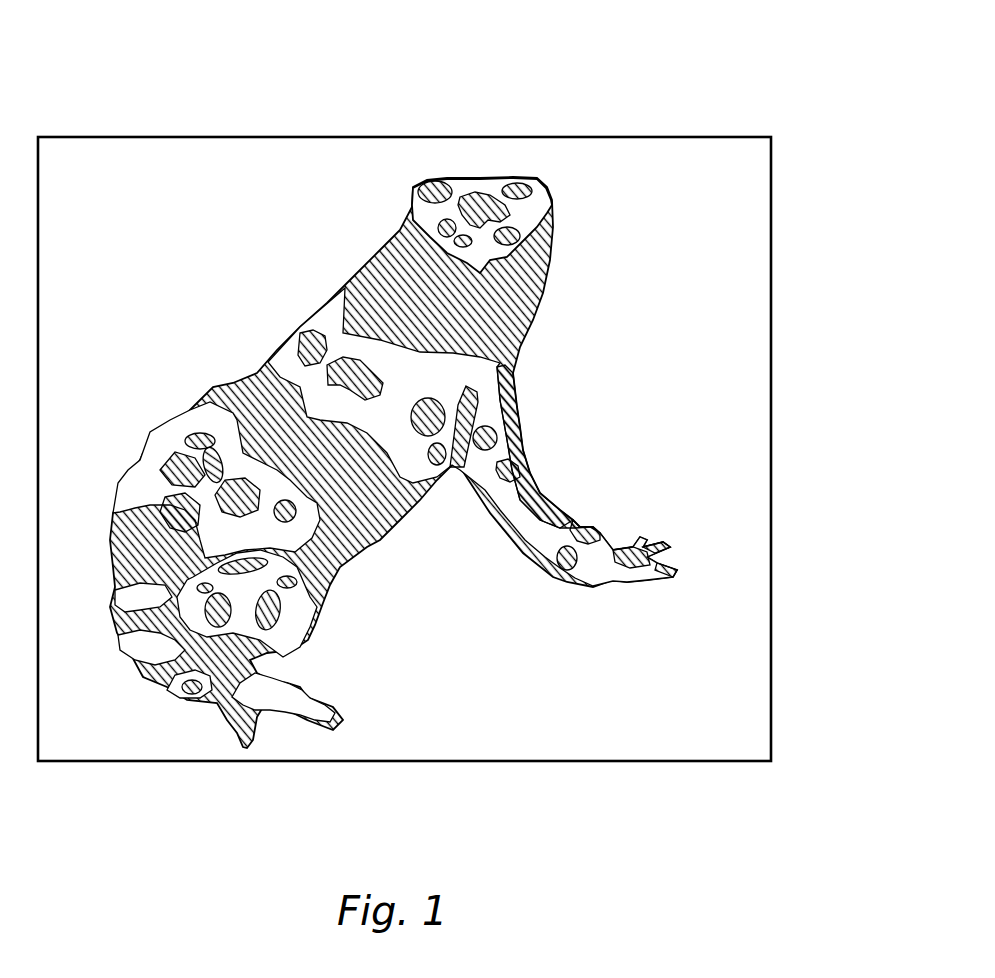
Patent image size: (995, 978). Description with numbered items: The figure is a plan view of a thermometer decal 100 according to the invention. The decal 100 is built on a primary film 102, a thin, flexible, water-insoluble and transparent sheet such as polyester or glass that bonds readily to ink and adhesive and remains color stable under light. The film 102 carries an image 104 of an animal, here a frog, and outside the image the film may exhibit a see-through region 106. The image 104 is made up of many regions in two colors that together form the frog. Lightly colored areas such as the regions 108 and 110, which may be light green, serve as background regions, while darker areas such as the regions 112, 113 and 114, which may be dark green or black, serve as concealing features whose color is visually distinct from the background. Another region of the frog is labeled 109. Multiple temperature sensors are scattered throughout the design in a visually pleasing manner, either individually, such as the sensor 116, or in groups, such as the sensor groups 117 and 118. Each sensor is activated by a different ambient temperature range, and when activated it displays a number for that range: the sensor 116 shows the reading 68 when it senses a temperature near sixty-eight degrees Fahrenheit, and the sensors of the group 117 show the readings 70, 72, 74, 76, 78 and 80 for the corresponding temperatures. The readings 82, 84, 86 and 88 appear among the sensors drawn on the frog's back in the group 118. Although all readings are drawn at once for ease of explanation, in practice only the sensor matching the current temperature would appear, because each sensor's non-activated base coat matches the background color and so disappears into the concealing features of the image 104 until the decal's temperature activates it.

The decal 100 is at (655, 40).
The primary film 102 is at (772, 291).
The image 104 is at (488, 170).
The see-through region 106 is at (186, 251).
The background region 108 is at (271, 349).
The foot portion 109 is at (603, 574).
The background region 110 is at (548, 190).
The concealing feature 112 is at (562, 578).
The concealing feature 113 is at (508, 470).
The concealing feature 114 is at (487, 434).
The sensor 116 is at (184, 482).
The sensor group 117 is at (367, 563).
The sensor group 118 is at (400, 247).
The colored region 68 is at (172, 524).
The colored region 70 is at (259, 398).
The colored region 72 is at (275, 428).
The colored region 74 is at (313, 458).
The colored region 76 is at (334, 488).
The colored region 78 is at (379, 491).
The colored region 80 is at (363, 521).
The colored region 82 is at (371, 303).
The colored region 84 is at (416, 273).
The colored region 86 is at (454, 323).
The colored region 88 is at (505, 311).